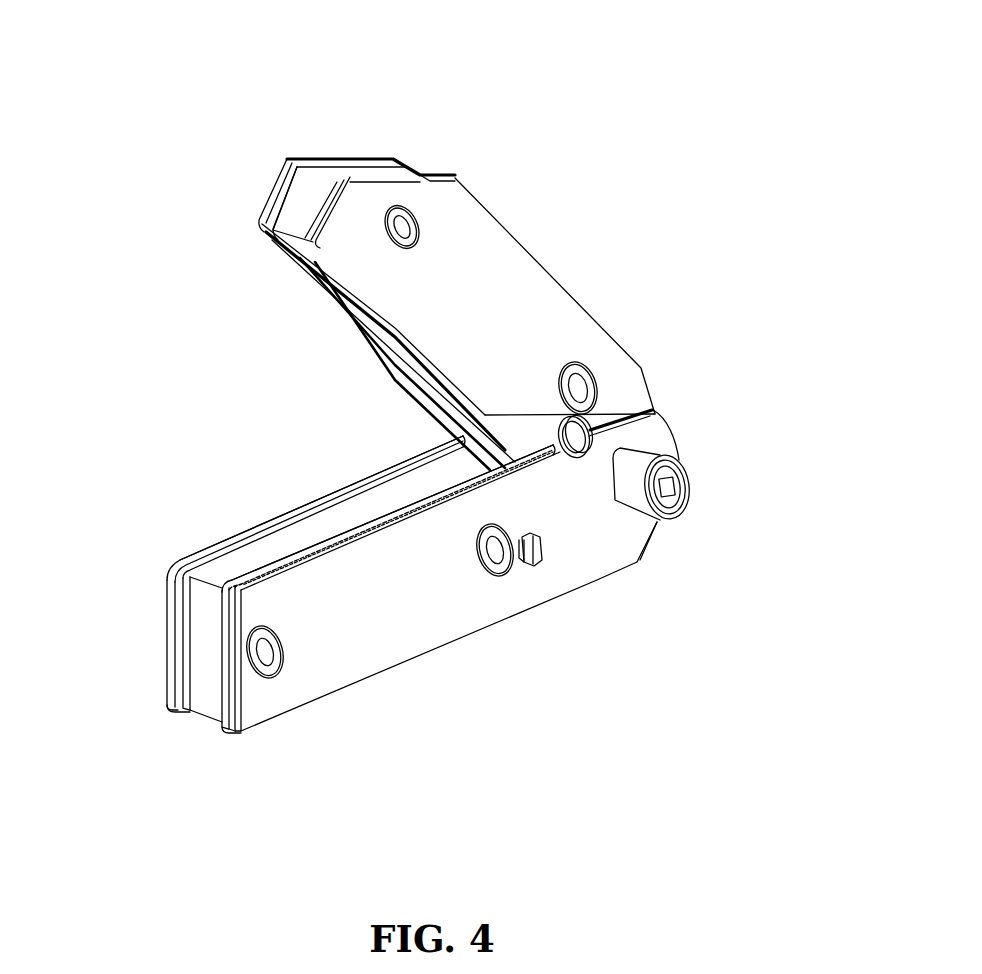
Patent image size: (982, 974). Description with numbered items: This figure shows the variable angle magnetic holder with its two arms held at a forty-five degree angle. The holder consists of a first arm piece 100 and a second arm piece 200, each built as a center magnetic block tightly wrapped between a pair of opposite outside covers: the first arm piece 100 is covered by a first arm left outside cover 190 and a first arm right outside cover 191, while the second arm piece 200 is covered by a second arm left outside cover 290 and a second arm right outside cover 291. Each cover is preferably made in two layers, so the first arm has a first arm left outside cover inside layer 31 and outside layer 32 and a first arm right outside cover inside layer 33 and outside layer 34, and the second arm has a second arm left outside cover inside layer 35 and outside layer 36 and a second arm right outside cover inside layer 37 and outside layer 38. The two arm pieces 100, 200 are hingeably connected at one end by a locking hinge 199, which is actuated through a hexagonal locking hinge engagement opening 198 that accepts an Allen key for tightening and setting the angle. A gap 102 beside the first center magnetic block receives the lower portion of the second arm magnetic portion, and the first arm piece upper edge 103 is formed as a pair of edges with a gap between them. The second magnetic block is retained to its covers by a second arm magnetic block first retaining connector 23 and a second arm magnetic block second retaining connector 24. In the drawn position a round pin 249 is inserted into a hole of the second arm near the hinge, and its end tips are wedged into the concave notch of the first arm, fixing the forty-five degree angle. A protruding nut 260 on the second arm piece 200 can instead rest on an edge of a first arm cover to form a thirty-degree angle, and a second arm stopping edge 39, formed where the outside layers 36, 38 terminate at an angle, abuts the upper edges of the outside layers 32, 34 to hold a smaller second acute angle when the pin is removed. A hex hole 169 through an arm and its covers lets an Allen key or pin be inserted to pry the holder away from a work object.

The second arm magnetic block first retaining connector 23 is at (385, 240).
The second arm magnetic block second retaining connector 24 is at (592, 386).
The first arm left outside cover inside layer 31 is at (307, 547).
The first arm left outside cover outside layer 32 is at (363, 530).
The first arm right outside cover inside layer 33 is at (230, 540).
The first arm right outside cover outside layer 34 is at (177, 567).
The second arm left outside cover inside layer 35 is at (330, 205).
The second arm left outside cover outside layer 36 is at (350, 180).
The second arm right outside cover inside layer 37 is at (290, 160).
The second arm right outside cover outside layer 38 is at (275, 190).
The second arm stopping edge 39 is at (520, 412).
The first arm piece 100 is at (347, 657).
The gap 102 is at (453, 463).
The first arm piece upper edge 103 is at (497, 467).
The hex hole 169 is at (530, 563).
The first arm left outside cover 190 is at (225, 733).
The first arm right outside cover 191 is at (180, 717).
The locking hinge engagement opening 198 is at (690, 487).
The locking hinge 199 is at (632, 507).
The second arm piece 200 is at (483, 280).
The round pin 249 is at (580, 438).
The protruding nut 260 is at (590, 367).
The second arm left outside cover 290 is at (447, 173).
The second arm right outside cover 291 is at (390, 152).